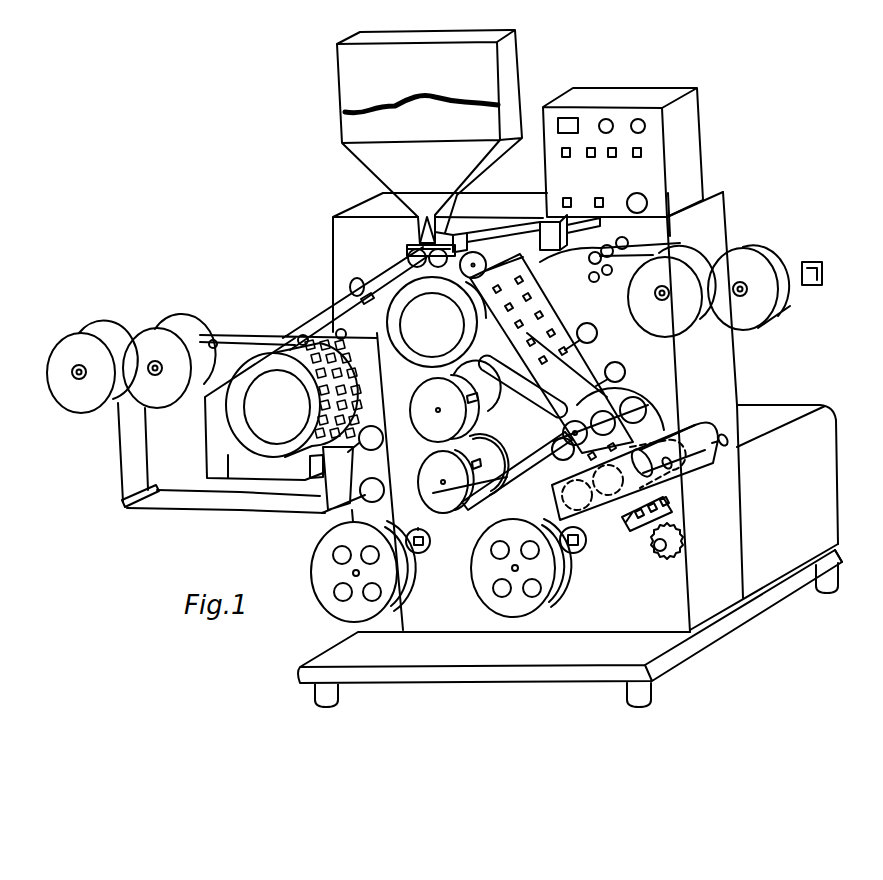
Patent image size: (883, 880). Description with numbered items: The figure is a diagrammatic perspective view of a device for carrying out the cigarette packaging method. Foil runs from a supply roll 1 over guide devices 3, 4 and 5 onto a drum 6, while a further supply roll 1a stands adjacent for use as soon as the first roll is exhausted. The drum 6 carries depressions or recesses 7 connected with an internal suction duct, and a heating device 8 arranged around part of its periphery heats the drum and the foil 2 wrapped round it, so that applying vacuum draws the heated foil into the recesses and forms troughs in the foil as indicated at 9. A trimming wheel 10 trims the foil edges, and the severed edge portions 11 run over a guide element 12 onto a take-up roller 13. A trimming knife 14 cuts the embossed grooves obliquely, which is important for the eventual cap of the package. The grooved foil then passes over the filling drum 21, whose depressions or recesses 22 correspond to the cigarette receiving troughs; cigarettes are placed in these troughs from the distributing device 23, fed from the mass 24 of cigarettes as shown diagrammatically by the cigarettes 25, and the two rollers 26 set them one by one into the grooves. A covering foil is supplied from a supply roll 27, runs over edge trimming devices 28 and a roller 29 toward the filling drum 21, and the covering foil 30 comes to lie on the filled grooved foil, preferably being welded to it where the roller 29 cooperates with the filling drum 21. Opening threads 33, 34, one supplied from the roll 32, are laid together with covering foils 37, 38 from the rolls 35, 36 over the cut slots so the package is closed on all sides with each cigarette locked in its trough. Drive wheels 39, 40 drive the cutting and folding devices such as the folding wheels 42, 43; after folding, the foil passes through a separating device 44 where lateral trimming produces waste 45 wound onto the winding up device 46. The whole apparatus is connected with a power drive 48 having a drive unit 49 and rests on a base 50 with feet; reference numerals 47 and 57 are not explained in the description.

The supply roll 1 is at (80, 408).
The further supply roll 1a is at (172, 340).
The foil 2 is at (128, 481).
The guide device 3 is at (125, 509).
The guide device 4 is at (324, 478).
The guide device 5 is at (315, 447).
The drum 6 is at (275, 438).
The depressions or recesses 7 is at (300, 442).
The heating device 8 is at (225, 470).
The troughs formed in the foil 9 is at (302, 335).
The trimming wheel 10 is at (337, 329).
The severed edge portions 11 is at (388, 485).
The guide element 12 is at (372, 425).
The take-up roller 13 is at (342, 596).
The trimming knife 14 is at (350, 288).
The filling drum 21 is at (421, 343).
The depressions or recesses 22 is at (477, 340).
The distributing device 23 is at (418, 233).
The mass of cigarettes 24 is at (373, 156).
The cigarettes 25 is at (435, 101).
The rollers 26 is at (408, 258).
The supply roll 27 is at (729, 239).
The edge trimming devices 28 is at (607, 278).
The roller 29 is at (491, 263).
The covering foil 30 is at (497, 236).
The roll 32 is at (424, 420).
The opening thread 33 is at (474, 404).
The opening thread 34 is at (527, 430).
The roll 35 is at (440, 511).
The roll 36 is at (492, 497).
The covering foil 37 is at (503, 377).
The covering foil 38 is at (518, 466).
The drive wheel 39 is at (597, 337).
The drive wheel 40 is at (624, 372).
The folding wheel 42 is at (574, 421).
The folding wheel 43 is at (640, 423).
The separating device 44 is at (586, 540).
The waste 45 is at (556, 596).
The winding up device 46 is at (475, 556).
The gear 47 is at (641, 405).
The power drive 48 is at (722, 384).
The drive unit 49 is at (822, 441).
The base 50 is at (843, 554).
The cover web reel 57 is at (754, 270).